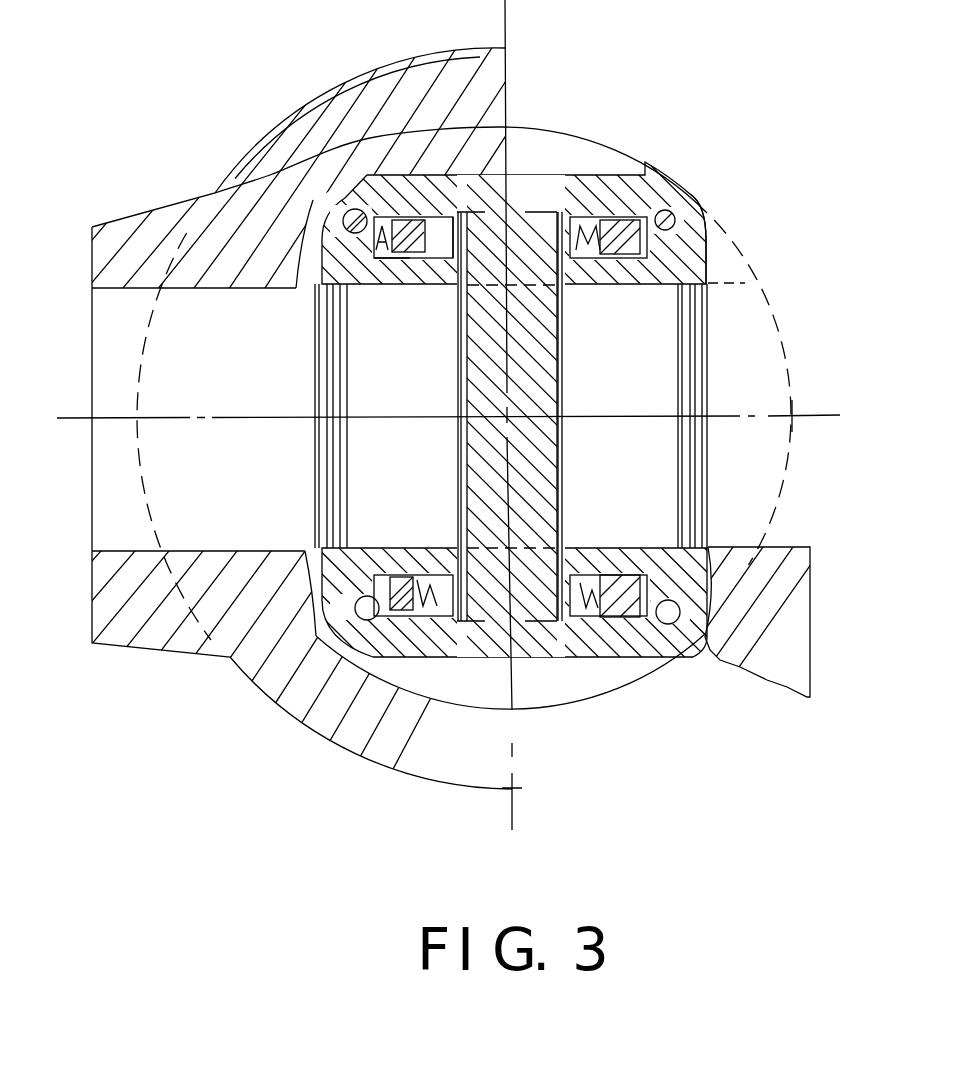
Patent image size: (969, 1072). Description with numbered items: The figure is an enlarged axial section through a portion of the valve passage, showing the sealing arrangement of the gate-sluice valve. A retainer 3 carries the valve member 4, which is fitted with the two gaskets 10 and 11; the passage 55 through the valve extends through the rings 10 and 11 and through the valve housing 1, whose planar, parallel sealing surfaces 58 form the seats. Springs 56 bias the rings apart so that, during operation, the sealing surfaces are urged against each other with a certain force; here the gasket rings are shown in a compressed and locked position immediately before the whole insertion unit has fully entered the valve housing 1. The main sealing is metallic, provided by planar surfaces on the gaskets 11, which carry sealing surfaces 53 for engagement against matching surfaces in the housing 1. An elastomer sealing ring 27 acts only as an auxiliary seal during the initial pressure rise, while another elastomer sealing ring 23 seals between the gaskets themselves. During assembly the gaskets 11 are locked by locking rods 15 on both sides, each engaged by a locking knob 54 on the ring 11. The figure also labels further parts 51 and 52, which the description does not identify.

The valve housing 1 is at (243, 183).
The retainer 3 is at (620, 205).
The valve member 4 is at (543, 348).
The gasket 10 is at (640, 257).
The gasket 11 is at (410, 215).
The locking rod 15 is at (343, 207).
The elastomer sealing ring 23 is at (413, 615).
The elastomer sealing ring 27 is at (705, 276).
The sleeve 51 is at (583, 280).
The O-ring 52 is at (704, 214).
The sealing surface 53 is at (707, 262).
The locking knob 54 is at (382, 205).
The passage 55 is at (653, 468).
The springs 56 is at (583, 217).
The sealing surfaces 58 is at (307, 547).